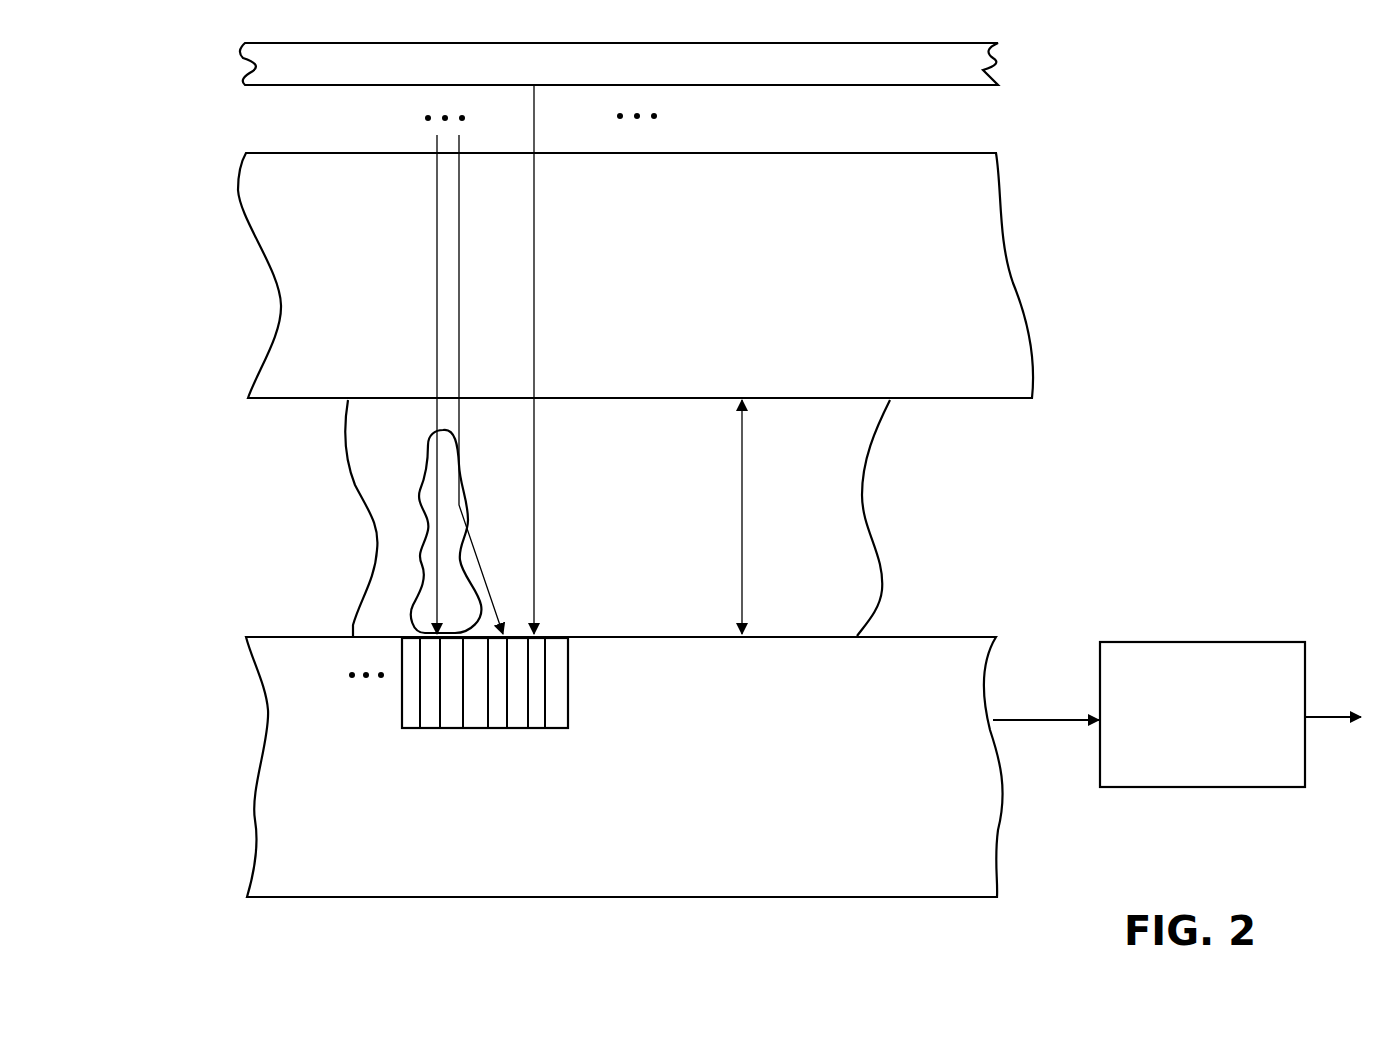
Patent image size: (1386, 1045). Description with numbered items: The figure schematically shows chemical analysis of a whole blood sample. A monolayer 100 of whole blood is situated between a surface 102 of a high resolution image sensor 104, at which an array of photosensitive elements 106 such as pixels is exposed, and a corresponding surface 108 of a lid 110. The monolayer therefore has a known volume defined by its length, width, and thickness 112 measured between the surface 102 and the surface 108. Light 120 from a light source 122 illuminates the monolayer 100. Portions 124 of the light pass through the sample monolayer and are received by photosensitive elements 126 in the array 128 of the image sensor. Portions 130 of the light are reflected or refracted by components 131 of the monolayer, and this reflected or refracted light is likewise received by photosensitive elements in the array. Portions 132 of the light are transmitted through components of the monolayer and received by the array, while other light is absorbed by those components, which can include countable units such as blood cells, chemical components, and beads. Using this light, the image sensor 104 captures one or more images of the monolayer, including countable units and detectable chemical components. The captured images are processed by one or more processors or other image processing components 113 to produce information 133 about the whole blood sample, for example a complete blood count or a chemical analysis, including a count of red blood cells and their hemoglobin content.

The monolayer 100 is at (377, 533).
The surface 102 is at (318, 635).
The high resolution image sensor 104 is at (248, 792).
The array of photosensitive elements 106 is at (412, 730).
The surface 108 is at (290, 403).
The lid 110 is at (1020, 283).
The thickness 112 is at (745, 527).
The image processing components 113 is at (1232, 790).
The light 120 is at (535, 140).
The light source 122 is at (1000, 63).
The portions of the light 124 is at (535, 500).
The photosensitive elements 126 is at (534, 700).
The array 128 is at (376, 728).
The portions of the light 130 is at (460, 465).
The components 131 is at (465, 570).
The portions of the light 132 is at (436, 485).
The information 133 is at (1333, 734).